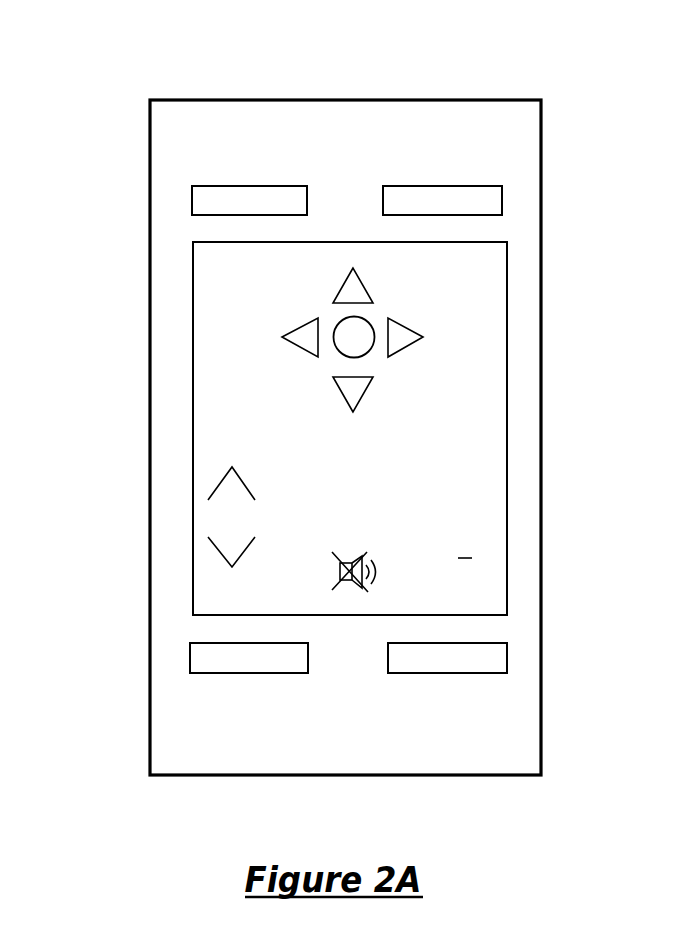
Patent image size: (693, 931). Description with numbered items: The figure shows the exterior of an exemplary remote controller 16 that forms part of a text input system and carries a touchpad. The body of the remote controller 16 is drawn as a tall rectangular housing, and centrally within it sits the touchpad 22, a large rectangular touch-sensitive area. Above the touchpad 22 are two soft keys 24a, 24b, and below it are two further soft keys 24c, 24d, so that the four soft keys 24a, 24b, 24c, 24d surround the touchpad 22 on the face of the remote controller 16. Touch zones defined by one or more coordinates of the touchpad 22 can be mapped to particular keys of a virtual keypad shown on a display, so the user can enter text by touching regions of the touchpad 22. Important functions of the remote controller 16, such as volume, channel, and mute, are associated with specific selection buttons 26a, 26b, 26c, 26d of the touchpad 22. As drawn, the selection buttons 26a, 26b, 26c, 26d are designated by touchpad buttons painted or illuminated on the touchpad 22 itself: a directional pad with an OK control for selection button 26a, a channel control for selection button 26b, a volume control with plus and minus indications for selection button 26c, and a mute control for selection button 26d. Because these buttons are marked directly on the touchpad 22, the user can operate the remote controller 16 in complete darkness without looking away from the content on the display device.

The remote controller 16 is at (343, 100).
The touchpad 22 is at (320, 242).
The soft key 24a is at (249, 186).
The soft key 24b is at (442, 186).
The soft key 24c is at (247, 673).
The soft key 24d is at (445, 673).
The selection button 26a is at (273, 298).
The selection button 26b is at (205, 472).
The selection button 26c is at (490, 495).
The selection button 26d is at (392, 570).